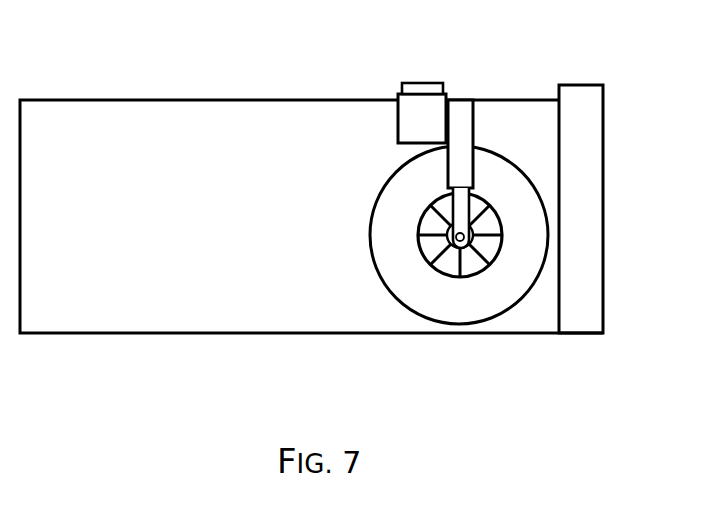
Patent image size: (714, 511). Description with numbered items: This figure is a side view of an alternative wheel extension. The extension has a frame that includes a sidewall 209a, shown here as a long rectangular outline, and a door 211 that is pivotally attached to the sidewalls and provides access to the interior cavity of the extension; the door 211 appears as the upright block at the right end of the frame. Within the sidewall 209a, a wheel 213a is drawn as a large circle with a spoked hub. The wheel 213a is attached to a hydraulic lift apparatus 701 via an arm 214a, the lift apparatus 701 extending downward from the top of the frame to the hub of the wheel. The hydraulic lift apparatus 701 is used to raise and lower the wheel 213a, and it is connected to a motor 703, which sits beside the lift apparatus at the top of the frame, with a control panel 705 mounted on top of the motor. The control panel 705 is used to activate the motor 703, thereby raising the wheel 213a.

The sidewall 209a is at (99, 100).
The door 211 is at (589, 333).
The wheel 213a is at (372, 253).
The arm 214a is at (420, 209).
The hydraulic lift apparatus 701 is at (489, 122).
The motor 703 is at (397, 132).
The control panel 705 is at (418, 83).